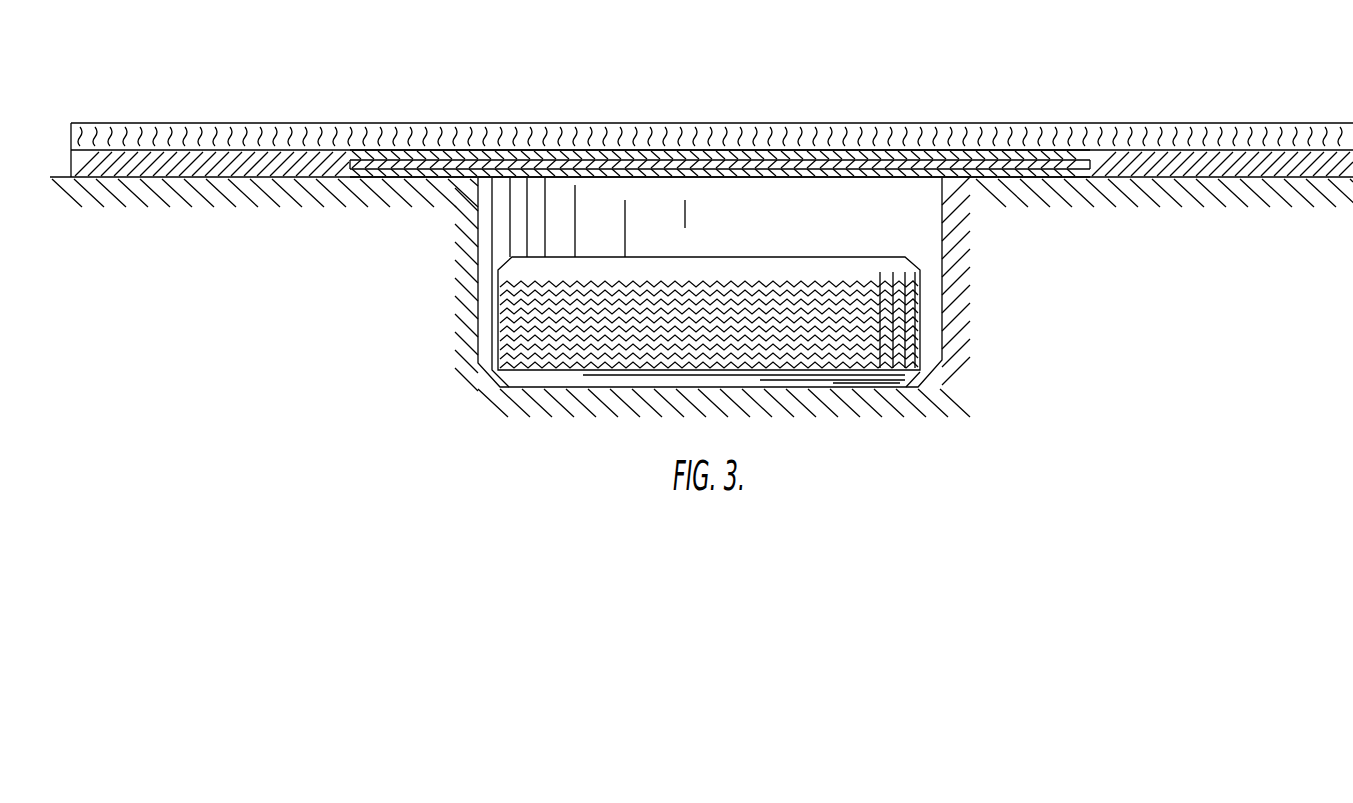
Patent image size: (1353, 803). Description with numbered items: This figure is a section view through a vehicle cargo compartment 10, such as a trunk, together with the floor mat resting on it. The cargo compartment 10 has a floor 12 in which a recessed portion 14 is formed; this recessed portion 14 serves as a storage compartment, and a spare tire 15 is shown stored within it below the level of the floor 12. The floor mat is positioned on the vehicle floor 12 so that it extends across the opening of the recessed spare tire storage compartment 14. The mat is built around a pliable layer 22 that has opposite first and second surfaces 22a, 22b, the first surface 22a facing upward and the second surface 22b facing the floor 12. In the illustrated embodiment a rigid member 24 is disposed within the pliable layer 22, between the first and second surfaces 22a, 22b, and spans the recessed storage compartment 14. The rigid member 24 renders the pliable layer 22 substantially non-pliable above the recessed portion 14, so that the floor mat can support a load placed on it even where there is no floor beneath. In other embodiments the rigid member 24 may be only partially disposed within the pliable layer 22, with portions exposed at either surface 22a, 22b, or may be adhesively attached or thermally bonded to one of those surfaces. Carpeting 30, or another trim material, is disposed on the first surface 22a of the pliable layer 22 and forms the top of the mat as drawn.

The cargo compartment 10 is at (170, 74).
The floor 12 is at (245, 176).
The recessed portion 14 is at (478, 248).
The spare tire 15 is at (695, 258).
The pliable layer 22 is at (1078, 180).
The first surface 22a is at (1146, 152).
The second surface 22b is at (1145, 178).
The rigid member 24 is at (1080, 160).
The carpeting 30 is at (740, 132).